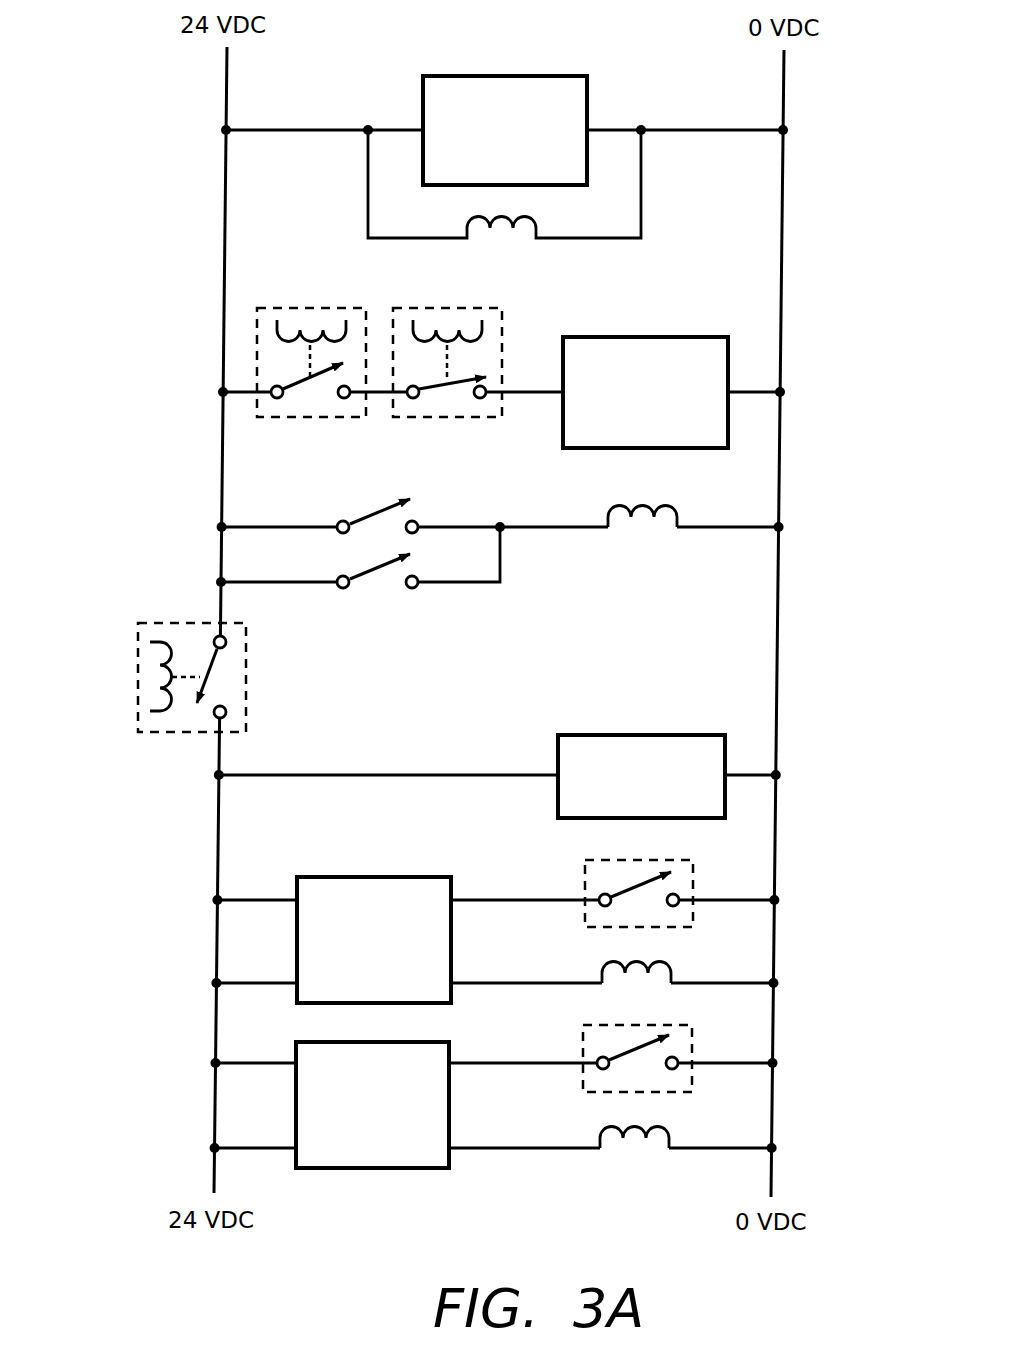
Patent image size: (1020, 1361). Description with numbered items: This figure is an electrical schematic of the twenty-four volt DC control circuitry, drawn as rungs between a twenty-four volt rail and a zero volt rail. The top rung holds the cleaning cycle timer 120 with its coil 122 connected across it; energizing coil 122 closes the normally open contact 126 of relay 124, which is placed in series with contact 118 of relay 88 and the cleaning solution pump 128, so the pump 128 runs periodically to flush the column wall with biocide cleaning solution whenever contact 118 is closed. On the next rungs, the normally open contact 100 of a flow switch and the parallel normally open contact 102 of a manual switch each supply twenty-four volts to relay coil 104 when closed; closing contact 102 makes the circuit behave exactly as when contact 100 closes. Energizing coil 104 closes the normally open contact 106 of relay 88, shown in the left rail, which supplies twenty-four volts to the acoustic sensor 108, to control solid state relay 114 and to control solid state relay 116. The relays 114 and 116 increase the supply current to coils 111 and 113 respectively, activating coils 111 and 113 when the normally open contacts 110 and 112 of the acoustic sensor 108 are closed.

The relay 88 is at (503, 338).
The normally open contact of flow switch 100 is at (355, 520).
The normally open contact of manual switch 102 is at (372, 580).
The relay coil 104 is at (452, 335).
The normally open contact of relay 88 106 is at (213, 675).
The acoustic sensor 108 is at (705, 748).
The normally open contact of acoustic sensor 110 is at (637, 885).
The coil 111 is at (647, 958).
The normally open contact of acoustic sensor 112 is at (637, 1050).
The coil 113 is at (647, 1124).
The control solid state relay 114 is at (437, 890).
The control solid state relay 116 is at (432, 1157).
The contact of relay 88 118 is at (440, 395).
The cleaning cycle timer 120 is at (568, 86).
The coil of cleaning cycle timer 122 is at (515, 214).
The relay 124 is at (257, 330).
The normally open contact of relay 124 126 is at (303, 395).
The cleaning solution pump 128 is at (708, 350).